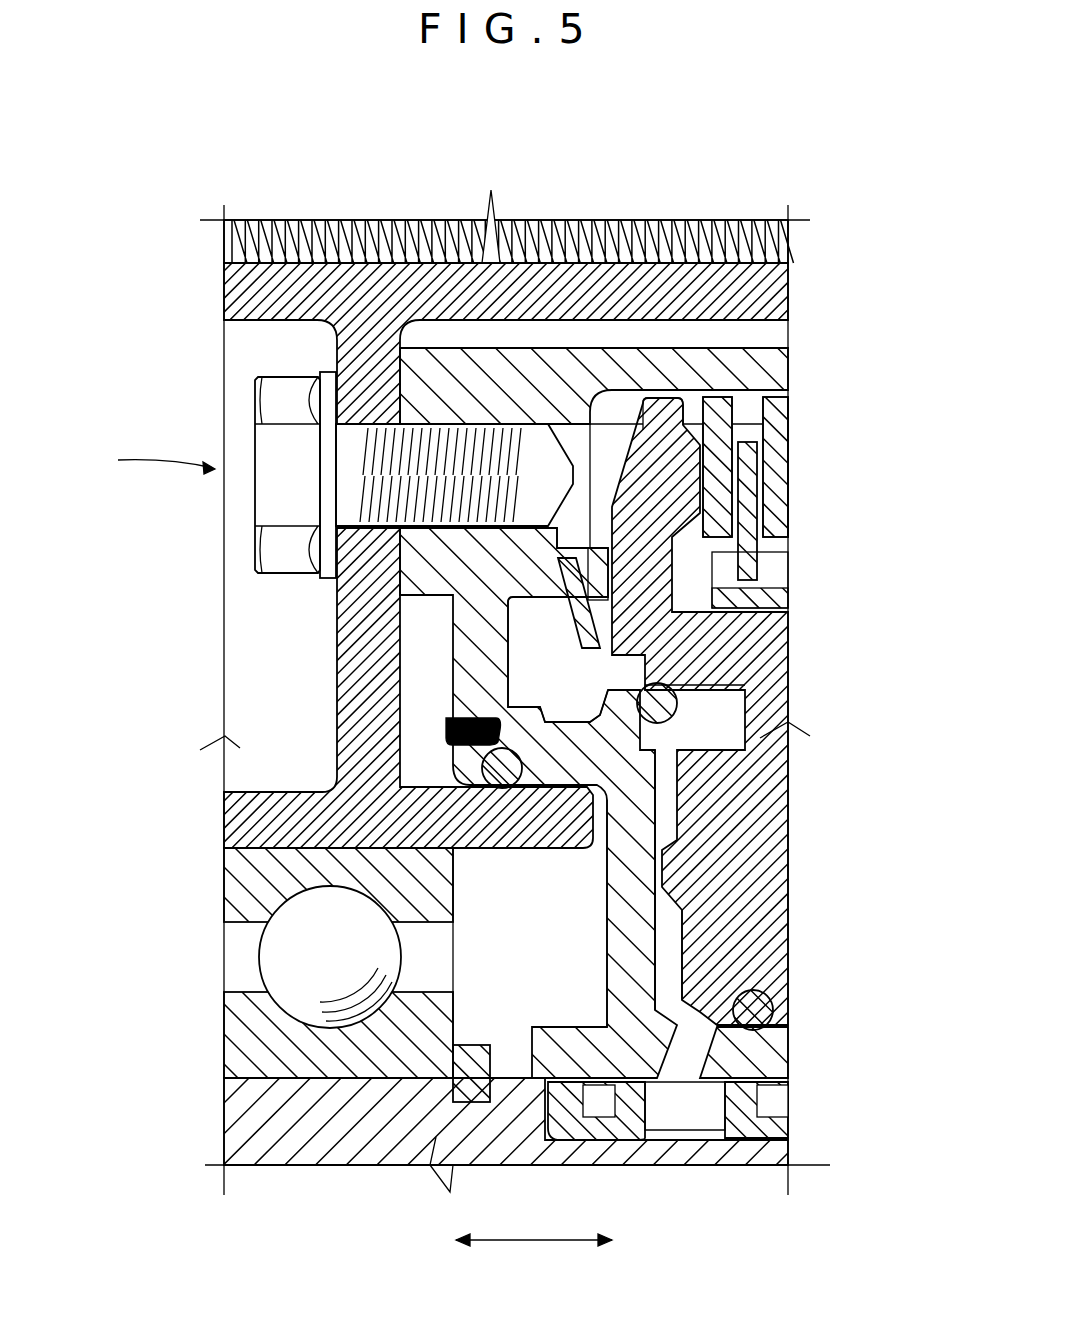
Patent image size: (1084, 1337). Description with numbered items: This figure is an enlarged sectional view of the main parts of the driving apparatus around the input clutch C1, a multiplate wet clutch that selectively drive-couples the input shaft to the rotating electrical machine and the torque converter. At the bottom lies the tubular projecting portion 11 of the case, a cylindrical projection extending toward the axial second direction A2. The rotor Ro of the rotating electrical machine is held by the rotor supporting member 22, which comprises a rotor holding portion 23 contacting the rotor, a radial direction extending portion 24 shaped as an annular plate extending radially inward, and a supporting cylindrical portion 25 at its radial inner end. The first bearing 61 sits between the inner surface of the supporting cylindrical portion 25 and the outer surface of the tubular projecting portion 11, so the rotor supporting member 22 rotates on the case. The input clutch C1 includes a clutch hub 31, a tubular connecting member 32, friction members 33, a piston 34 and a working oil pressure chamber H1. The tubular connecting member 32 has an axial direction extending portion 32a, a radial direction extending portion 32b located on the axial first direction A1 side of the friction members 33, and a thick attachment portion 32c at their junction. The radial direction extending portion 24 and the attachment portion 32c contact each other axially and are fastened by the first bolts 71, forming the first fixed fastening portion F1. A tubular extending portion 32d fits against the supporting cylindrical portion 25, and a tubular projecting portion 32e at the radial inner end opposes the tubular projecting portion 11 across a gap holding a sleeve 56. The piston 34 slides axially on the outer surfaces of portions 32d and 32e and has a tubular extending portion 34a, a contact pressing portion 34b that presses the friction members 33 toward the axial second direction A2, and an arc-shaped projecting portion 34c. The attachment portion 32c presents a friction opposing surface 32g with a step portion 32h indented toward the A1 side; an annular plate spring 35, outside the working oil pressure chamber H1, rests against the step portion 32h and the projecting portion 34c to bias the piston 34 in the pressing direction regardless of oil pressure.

The tubular projecting portion 11 is at (370, 1157).
The rotor supporting member 22 is at (222, 290).
The rotor holding portion 23 is at (232, 322).
The radial direction extending portion 24 is at (345, 690).
The supporting cylindrical portion 25 is at (278, 803).
The clutch hub 31 is at (777, 571).
The tubular connecting member 32 is at (721, 348).
The axial direction extending portion 32a is at (730, 365).
The radial direction extending portion 32b is at (497, 686).
The attachment portion 32c is at (510, 547).
The tubular extending portion 32d is at (590, 753).
The tubular projecting portion 32e is at (773, 1050).
The friction opposing surface 32g is at (637, 425).
The step portion 32h is at (713, 556).
The friction member 33 is at (776, 505).
The piston 34 is at (750, 853).
The tubular extending portion 34a is at (705, 655).
The contact pressing portion 34b is at (697, 470).
The projecting portion 34c is at (570, 637).
The plate spring 35 is at (595, 601).
The sleeve 56 is at (777, 1137).
The first bearing 61 is at (332, 1050).
The first bolt 71 is at (275, 455).
The rotor Ro is at (385, 220).
The input clutch C1 is at (790, 430).
The first fixed fastening portion F1 is at (147, 459).
The working oil pressure chamber H1 is at (672, 920).
The axial first direction A1 is at (512, 1240).
The axial second direction A2 is at (627, 1240).